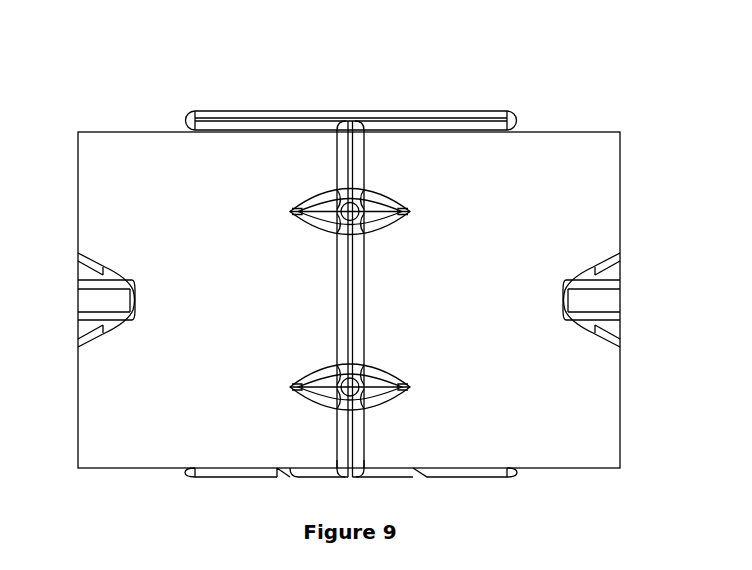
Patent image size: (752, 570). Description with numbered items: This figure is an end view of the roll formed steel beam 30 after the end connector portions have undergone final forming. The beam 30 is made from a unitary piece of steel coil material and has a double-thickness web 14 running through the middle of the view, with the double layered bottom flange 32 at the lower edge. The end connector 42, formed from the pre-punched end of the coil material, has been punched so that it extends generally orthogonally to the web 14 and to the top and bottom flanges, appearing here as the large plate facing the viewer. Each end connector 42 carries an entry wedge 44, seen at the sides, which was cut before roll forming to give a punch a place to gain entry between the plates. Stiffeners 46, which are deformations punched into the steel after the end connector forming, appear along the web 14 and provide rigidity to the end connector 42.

The roll formed steel beam 30 is at (495, 65).
The web 14 is at (326, 120).
The end connector 42 is at (547, 192).
The bottom flange 32 is at (483, 477).
The entry wedge 44 is at (98, 303).
The stiffener 46 is at (328, 198).